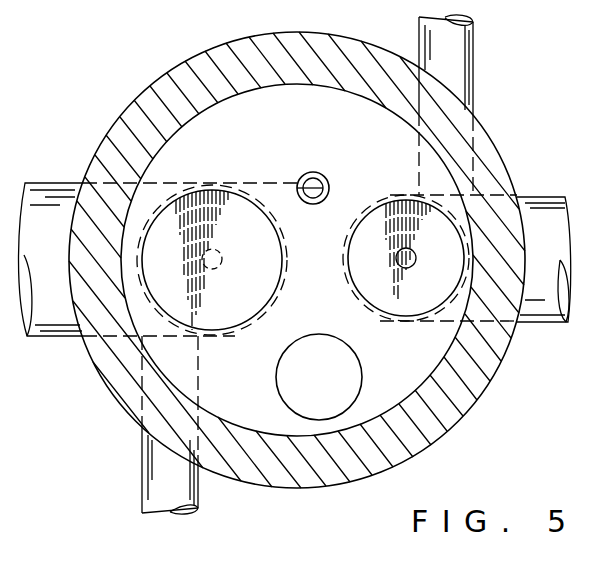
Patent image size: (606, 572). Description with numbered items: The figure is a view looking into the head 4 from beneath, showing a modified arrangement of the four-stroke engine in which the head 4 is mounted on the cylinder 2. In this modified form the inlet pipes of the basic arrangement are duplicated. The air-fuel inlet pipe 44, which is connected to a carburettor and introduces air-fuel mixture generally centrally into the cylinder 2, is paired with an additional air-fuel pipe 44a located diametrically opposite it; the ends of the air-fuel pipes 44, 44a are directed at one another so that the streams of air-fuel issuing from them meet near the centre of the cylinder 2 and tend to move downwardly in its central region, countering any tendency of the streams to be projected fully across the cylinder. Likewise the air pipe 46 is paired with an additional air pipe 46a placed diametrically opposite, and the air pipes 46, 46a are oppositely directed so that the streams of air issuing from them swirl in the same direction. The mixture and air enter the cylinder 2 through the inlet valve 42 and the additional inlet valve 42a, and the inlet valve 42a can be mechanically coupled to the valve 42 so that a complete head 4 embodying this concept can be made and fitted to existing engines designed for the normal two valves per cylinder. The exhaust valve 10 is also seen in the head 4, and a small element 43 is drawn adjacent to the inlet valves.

The cylinder 2 is at (490, 357).
The head 4 is at (447, 390).
The exhaust valve 10 is at (278, 385).
The inlet valve 42 is at (259, 287).
The inlet valve 42a is at (442, 302).
The plug 43 is at (330, 188).
The inlet pipe 44 is at (55, 306).
The air-fuel pipe 44a is at (543, 213).
The inlet pipe 46 is at (165, 468).
The air pipe 46a is at (454, 62).